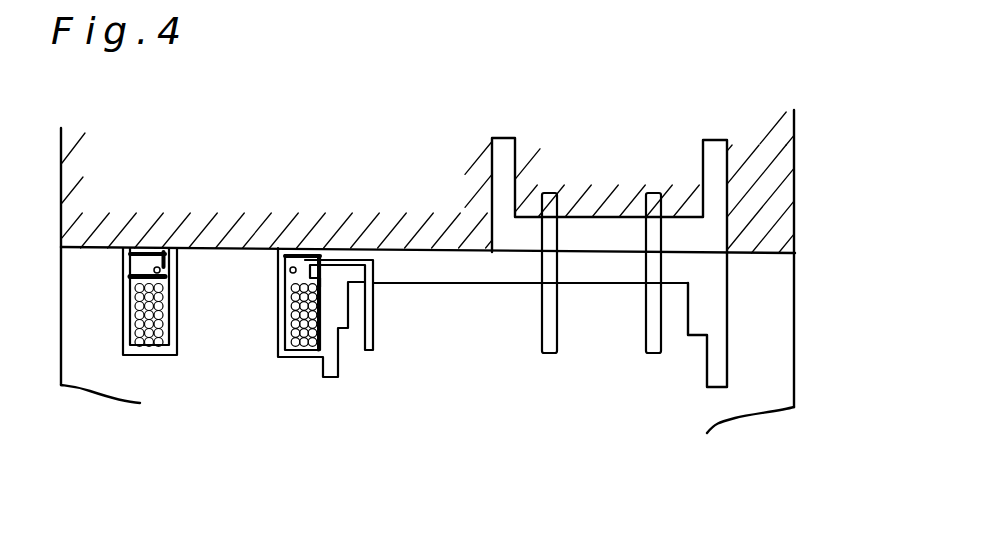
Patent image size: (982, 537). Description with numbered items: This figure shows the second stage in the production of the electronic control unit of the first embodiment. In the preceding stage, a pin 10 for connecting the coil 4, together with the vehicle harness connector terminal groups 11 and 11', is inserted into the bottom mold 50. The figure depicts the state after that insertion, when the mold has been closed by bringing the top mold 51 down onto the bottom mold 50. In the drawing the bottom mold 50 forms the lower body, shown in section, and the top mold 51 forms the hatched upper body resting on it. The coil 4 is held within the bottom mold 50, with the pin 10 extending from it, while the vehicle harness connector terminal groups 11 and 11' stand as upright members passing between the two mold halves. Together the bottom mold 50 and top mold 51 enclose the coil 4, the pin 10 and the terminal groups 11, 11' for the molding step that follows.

The coil 4 is at (300, 357).
The pin 10 is at (377, 337).
The vehicle harness connector terminal group 11 is at (529, 310).
The vehicle harness connector terminal group 11' is at (640, 310).
The bottom mold 50 is at (773, 363).
The top mold 51 is at (767, 183).